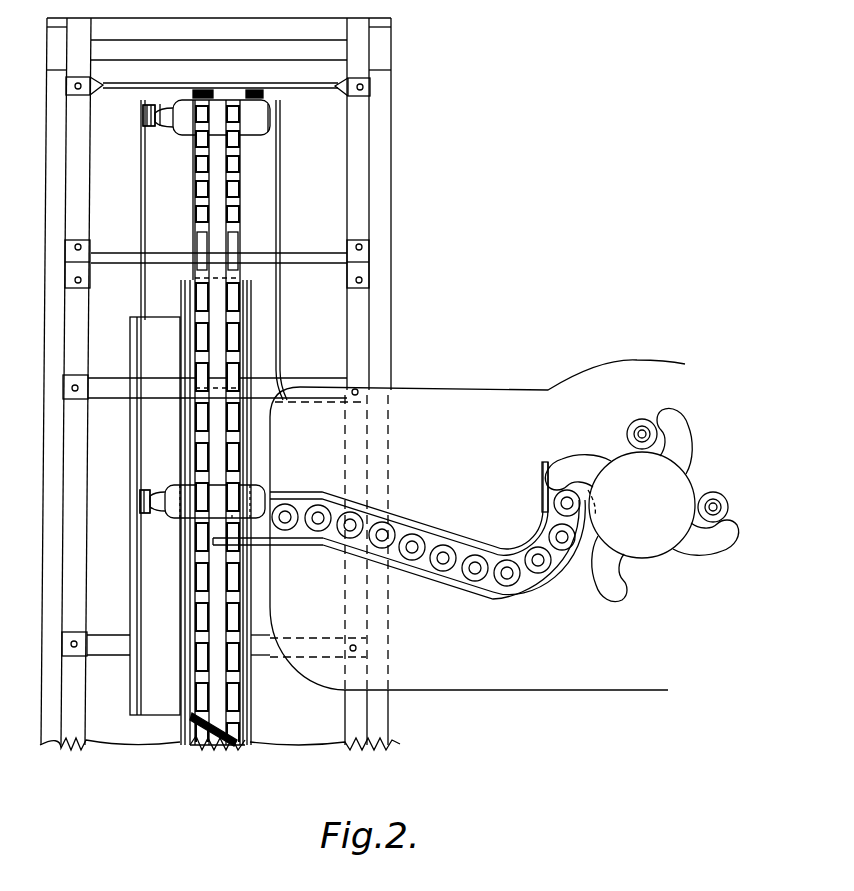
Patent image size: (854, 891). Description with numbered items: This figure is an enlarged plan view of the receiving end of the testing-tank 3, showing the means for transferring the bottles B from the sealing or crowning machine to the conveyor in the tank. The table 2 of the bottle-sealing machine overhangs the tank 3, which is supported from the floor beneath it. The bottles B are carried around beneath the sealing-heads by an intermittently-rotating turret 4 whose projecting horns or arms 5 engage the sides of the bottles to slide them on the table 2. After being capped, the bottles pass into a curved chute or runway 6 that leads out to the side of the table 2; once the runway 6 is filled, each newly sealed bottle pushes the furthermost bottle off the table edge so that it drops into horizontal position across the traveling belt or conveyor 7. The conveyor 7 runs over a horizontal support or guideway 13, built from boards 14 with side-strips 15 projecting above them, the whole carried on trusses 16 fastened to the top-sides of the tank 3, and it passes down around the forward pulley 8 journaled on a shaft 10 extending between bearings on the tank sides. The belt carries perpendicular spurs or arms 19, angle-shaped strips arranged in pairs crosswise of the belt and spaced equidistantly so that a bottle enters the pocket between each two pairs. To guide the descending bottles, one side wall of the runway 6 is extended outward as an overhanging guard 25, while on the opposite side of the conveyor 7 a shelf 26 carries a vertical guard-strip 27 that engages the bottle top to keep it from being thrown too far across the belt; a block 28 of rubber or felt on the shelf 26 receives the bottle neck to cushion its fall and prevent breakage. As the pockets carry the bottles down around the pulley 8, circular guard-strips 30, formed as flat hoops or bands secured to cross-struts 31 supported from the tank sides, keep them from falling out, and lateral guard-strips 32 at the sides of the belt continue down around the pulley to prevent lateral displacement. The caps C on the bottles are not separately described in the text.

The table 2 is at (477, 525).
The testing-tank 3 is at (220, 384).
The intermittently-rotating turret 4 is at (642, 505).
The projecting horns or arms 5 is at (641, 504).
The curved chute or runway 6 is at (440, 586).
The traveling belt or conveyor 7 is at (224, 160).
The forward pulley 8 is at (194, 170).
The shaft 10 is at (122, 258).
The horizontal support or guideway 13 is at (222, 745).
The boards 14 is at (206, 748).
The side-strips 15 is at (188, 524).
The trusses 16 is at (96, 392).
The perpendicular spurs or arms 19 is at (198, 122).
The overhanging guard 25 is at (262, 545).
The shelf 26 is at (155, 516).
The vertical guard-strip 27 is at (133, 345).
The block 28 is at (143, 512).
The circular guard-strips 30 is at (195, 92).
The cross-struts 31 is at (150, 90).
The lateral guard-strips 32 is at (144, 203).
The bottles B is at (178, 118).
The bottle caps C is at (146, 117).